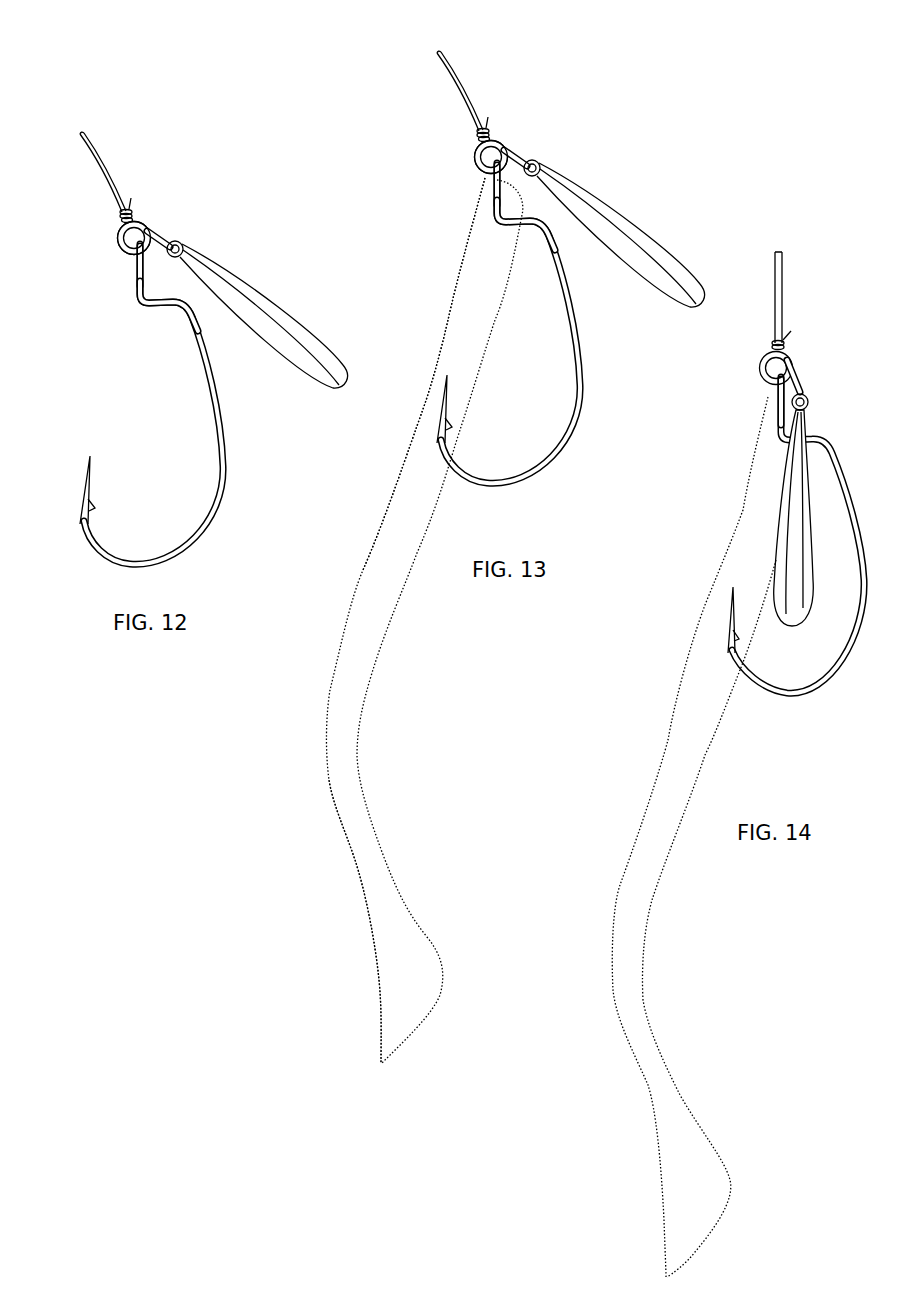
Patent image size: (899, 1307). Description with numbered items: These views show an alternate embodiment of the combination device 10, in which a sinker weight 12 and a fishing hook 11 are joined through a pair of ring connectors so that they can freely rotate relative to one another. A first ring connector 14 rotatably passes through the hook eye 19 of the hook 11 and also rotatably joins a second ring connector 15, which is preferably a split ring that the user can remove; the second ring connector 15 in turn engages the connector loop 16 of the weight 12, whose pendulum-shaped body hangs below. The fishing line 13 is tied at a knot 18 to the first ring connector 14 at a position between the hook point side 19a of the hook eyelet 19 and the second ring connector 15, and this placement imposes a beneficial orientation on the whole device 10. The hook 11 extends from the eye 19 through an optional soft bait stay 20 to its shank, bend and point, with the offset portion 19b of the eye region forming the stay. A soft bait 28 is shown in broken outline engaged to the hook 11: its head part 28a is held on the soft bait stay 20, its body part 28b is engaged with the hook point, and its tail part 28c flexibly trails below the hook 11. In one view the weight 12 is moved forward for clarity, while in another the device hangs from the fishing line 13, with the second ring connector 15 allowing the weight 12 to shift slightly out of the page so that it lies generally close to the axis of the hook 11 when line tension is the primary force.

In FIG. 12, the combination device 10 is at (205, 230).
In FIG. 13, the combination device 10 is at (563, 150).
In FIG. 12, the fishing hook 11 is at (222, 505).
In FIG. 13, the fishing hook 11 is at (580, 422).
In FIG. 14, the fishing hook 11 is at (803, 692).
In FIG. 12, the sinker weight 12 is at (250, 297).
In FIG. 13, the sinker weight 12 is at (600, 213).
In FIG. 14, the sinker weight 12 is at (802, 602).
In FIG. 12, the fishing line 13 is at (105, 163).
In FIG. 13, the fishing line 13 is at (465, 80).
In FIG. 14, the fishing line 13 is at (775, 283).
In FIG. 12, the first ring connector 14 is at (117, 242).
In FIG. 13, the first ring connector 14 is at (475, 158).
In FIG. 14, the first ring connector 14 is at (757, 372).
In FIG. 12, the second ring connector 15 is at (155, 243).
In FIG. 13, the second ring connector 15 is at (512, 160).
In FIG. 14, the second ring connector 15 is at (797, 373).
In FIG. 14, the connector loop 16 is at (808, 395).
In FIG. 12, the knot 18 is at (127, 213).
In FIG. 13, the knot 18 is at (485, 130).
In FIG. 14, the knot 18 is at (782, 342).
In FIG. 13, the hook eye 19 is at (488, 175).
In FIG. 14, the hook eye 19 is at (777, 390).
In FIG. 12, the hook point side of hook eyelet 19a is at (128, 263).
In FIG. 12, the shank offset portion 19b is at (152, 267).
In FIG. 13, the soft bait stay 20 is at (495, 220).
In FIG. 13, the soft bait 28 is at (337, 663).
In FIG. 14, the soft bait 28 is at (655, 775).
In FIG. 13, the bait head 28a is at (478, 207).
In FIG. 13, the body part 28b is at (423, 412).
In FIG. 13, the tail part 28c is at (352, 852).